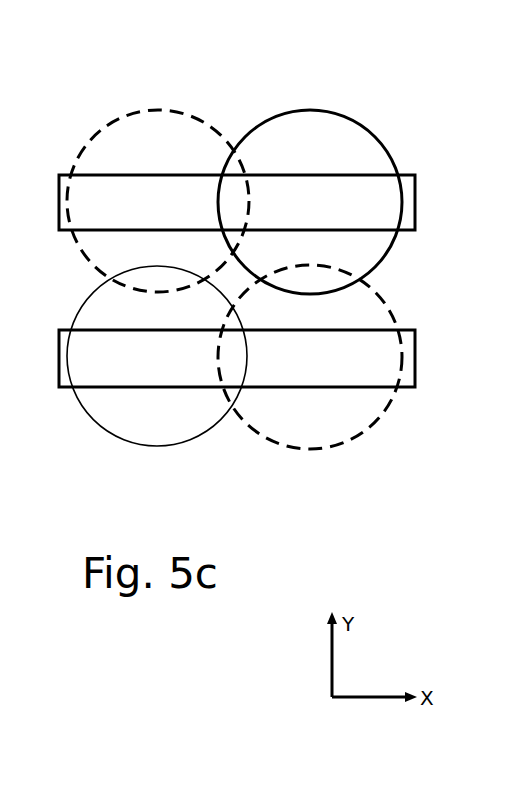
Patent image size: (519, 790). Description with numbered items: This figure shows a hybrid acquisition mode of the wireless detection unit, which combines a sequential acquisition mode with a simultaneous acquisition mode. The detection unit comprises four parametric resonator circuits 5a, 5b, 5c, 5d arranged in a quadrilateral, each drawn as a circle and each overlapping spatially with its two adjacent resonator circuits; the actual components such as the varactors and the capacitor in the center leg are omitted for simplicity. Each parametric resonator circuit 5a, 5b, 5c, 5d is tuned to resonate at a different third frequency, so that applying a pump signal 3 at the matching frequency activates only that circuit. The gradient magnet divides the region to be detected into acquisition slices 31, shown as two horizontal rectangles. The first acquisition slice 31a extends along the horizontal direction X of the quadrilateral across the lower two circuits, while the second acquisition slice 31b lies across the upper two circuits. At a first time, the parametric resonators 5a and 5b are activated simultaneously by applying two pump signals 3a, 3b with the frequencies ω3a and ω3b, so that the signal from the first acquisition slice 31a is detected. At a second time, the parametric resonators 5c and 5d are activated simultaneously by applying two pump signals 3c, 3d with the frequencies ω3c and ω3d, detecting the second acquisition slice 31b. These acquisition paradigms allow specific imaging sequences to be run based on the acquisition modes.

The pump signal 3 is at (233, 282).
The pump signal 3a is at (106, 443).
The pump signal 3b is at (276, 448).
The pump signal 3c is at (258, 68).
The pump signal 3d is at (424, 76).
The parametric resonator circuit 5a is at (89, 306).
The parametric resonator circuit 5b is at (385, 313).
The parametric resonator circuit 5c is at (111, 126).
The parametric resonator circuit 5d is at (284, 128).
The acquisition slices 31 is at (284, 268).
The first acquisition slice 31a is at (417, 344).
The second acquisition slice 31b is at (417, 180).